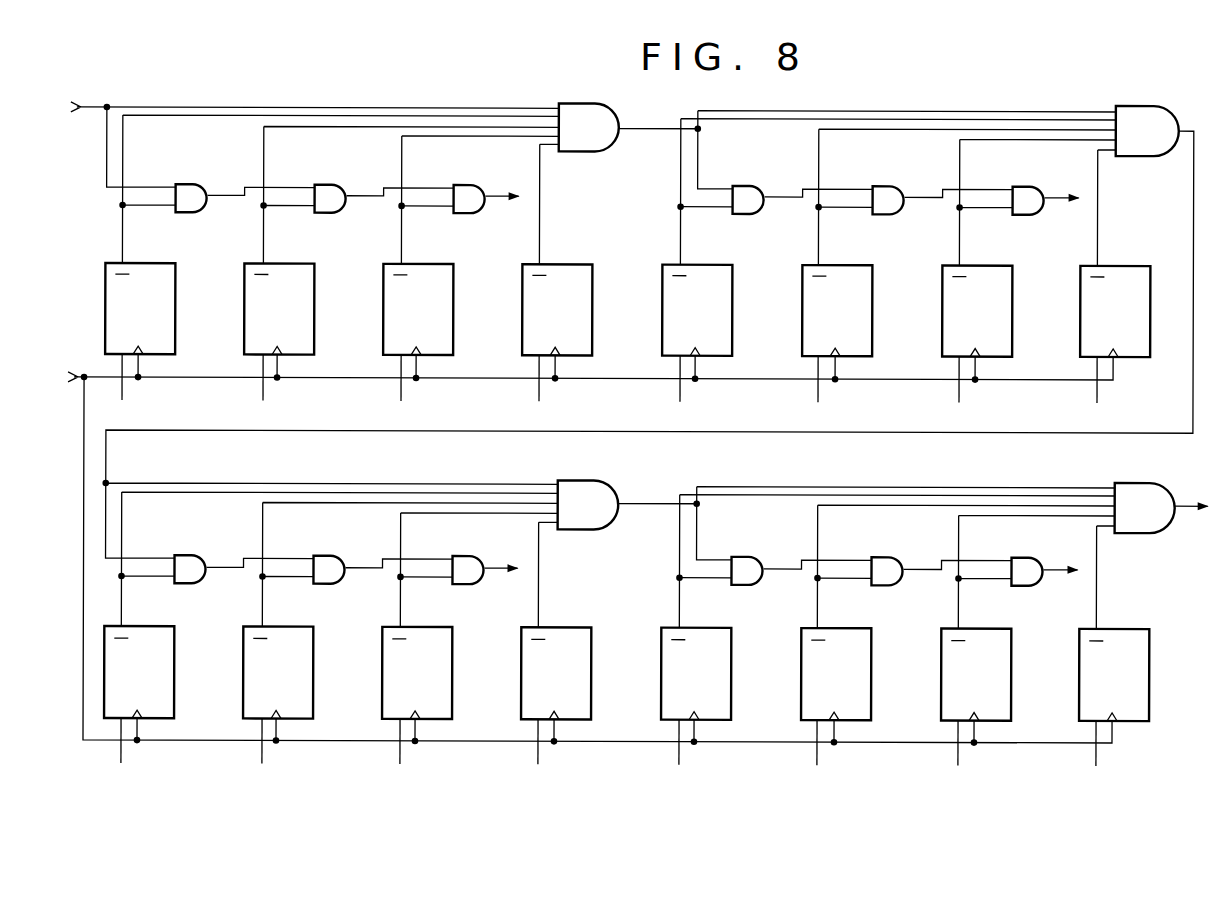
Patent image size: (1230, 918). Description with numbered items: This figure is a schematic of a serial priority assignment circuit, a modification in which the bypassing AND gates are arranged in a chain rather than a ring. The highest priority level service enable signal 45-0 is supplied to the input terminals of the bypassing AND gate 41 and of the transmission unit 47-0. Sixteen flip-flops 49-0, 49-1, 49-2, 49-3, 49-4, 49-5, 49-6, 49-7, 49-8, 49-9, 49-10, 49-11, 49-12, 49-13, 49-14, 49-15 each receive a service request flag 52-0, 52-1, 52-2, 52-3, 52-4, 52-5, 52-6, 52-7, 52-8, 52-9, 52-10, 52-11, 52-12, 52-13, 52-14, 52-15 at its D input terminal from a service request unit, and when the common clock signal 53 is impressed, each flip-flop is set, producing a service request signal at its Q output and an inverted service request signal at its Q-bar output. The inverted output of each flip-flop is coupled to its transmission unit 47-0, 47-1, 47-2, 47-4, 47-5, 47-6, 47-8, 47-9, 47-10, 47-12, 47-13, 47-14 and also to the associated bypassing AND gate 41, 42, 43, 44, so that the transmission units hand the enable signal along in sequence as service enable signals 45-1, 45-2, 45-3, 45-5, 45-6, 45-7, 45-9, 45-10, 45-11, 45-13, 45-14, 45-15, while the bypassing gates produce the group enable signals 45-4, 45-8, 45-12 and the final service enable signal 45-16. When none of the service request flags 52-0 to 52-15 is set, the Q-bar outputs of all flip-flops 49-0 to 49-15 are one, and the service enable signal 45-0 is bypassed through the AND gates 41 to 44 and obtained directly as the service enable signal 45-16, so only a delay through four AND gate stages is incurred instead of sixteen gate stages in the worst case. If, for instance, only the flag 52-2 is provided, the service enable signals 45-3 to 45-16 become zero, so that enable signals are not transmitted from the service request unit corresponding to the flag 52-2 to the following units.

The AND gate 41 is at (600, 138).
The AND gate 42 is at (1135, 142).
The AND gate 43 is at (578, 488).
The AND gate 44 is at (1135, 518).
The clock signal 53 is at (587, 547).
The service enable signal 45-0 is at (315, 134).
The service enable signal 45-1 is at (226, 189).
The service enable signal 45-2 is at (360, 189).
The service enable signal 45-3 is at (511, 184).
The service enable signal 45-4 is at (867, 148).
The service enable signal 45-5 is at (780, 189).
The service enable signal 45-6 is at (920, 189).
The service enable signal 45-7 is at (1071, 188).
The service enable signal 45-8 is at (666, 333).
The service enable signal 45-9 is at (225, 563).
The service enable signal 45-10 is at (360, 563).
The service enable signal 45-11 is at (511, 553).
The service enable signal 45-12 is at (866, 517).
The service enable signal 45-13 is at (780, 564).
The service enable signal 45-14 is at (920, 564).
The service enable signal 45-15 is at (1073, 561).
The service enable signal 45-16 is at (1202, 496).
The transmission unit 47-0 is at (189, 205).
The transmission unit 47-1 is at (328, 205).
The transmission unit 47-2 is at (467, 205).
The transmission unit 47-4 is at (746, 205).
The transmission unit 47-5 is at (886, 205).
The transmission unit 47-6 is at (1026, 205).
The transmission unit 47-8 is at (189, 576).
The transmission unit 47-9 is at (328, 576).
The transmission unit 47-10 is at (467, 576).
The transmission unit 47-12 is at (746, 576).
The transmission unit 47-13 is at (886, 576).
The transmission unit 47-14 is at (1026, 576).
The flip-flop 49-0 is at (167, 315).
The flip-flop 49-1 is at (306, 315).
The flip-flop 49-2 is at (445, 315).
The flip-flop 49-3 is at (584, 315).
The flip-flop 49-4 is at (724, 315).
The flip-flop 49-5 is at (864, 315).
The flip-flop 49-6 is at (1004, 315).
The flip-flop 49-7 is at (1133, 356).
The flip-flop 49-8 is at (165, 684).
The flip-flop 49-9 is at (304, 684).
The flip-flop 49-10 is at (443, 684).
The flip-flop 49-11 is at (582, 684).
The flip-flop 49-12 is at (722, 684).
The flip-flop 49-13 is at (862, 684).
The flip-flop 49-14 is at (1002, 684).
The flip-flop 49-15 is at (1140, 684).
The service request flag 52-0 is at (130, 390).
The service request flag 52-1 is at (265, 390).
The service request flag 52-2 is at (405, 391).
The service request flag 52-3 is at (543, 391).
The service request flag 52-4 is at (685, 392).
The service request flag 52-5 is at (825, 392).
The service request flag 52-6 is at (967, 392).
The service request flag 52-7 is at (1105, 393).
The service request flag 52-8 is at (148, 748).
The service request flag 52-9 is at (289, 748).
The service request flag 52-10 is at (434, 749).
The service request flag 52-11 is at (573, 749).
The service request flag 52-12 is at (713, 750).
The service request flag 52-13 is at (851, 750).
The service request flag 52-14 is at (992, 751).
The service request flag 52-15 is at (1130, 751).